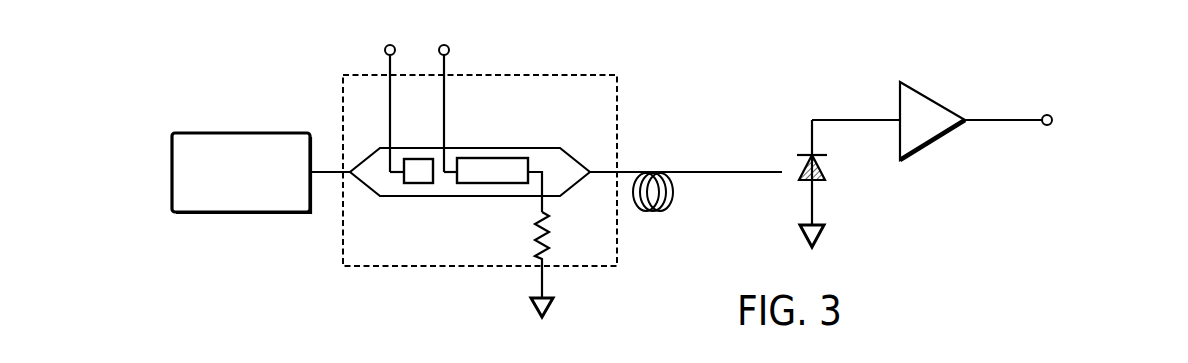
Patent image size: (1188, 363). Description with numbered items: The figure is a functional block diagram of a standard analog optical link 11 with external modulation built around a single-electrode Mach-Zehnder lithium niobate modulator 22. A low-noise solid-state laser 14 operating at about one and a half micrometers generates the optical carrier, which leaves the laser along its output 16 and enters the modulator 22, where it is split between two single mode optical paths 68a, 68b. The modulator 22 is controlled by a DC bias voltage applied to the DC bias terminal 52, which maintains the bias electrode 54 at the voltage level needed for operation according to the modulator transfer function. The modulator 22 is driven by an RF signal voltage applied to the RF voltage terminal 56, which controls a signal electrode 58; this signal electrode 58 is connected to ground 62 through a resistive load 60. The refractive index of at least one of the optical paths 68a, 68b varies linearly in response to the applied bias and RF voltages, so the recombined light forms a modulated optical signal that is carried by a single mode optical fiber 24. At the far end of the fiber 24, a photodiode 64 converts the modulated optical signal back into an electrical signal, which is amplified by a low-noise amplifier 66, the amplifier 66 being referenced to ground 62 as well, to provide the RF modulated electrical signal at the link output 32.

The analog optical link 11 is at (726, 67).
The solid-state laser 14 is at (243, 131).
The laser output 16 is at (327, 174).
The Mach-Zehnder lithium niobate modulator 22 is at (542, 74).
The single mode optical fiber 24 is at (628, 168).
The link output 32 is at (1052, 113).
The DC bias terminal 52 is at (390, 44).
The bias electrode 54 is at (418, 184).
The RF voltage terminal 56 is at (444, 44).
The signal electrode 58 is at (507, 184).
The resistive load 60 is at (548, 240).
The ground 62 is at (553, 305).
The photodiode 64 is at (830, 172).
The low-noise amplifier 66 is at (928, 93).
The single mode optical path 68a is at (492, 146).
The single mode optical path 68b is at (457, 197).